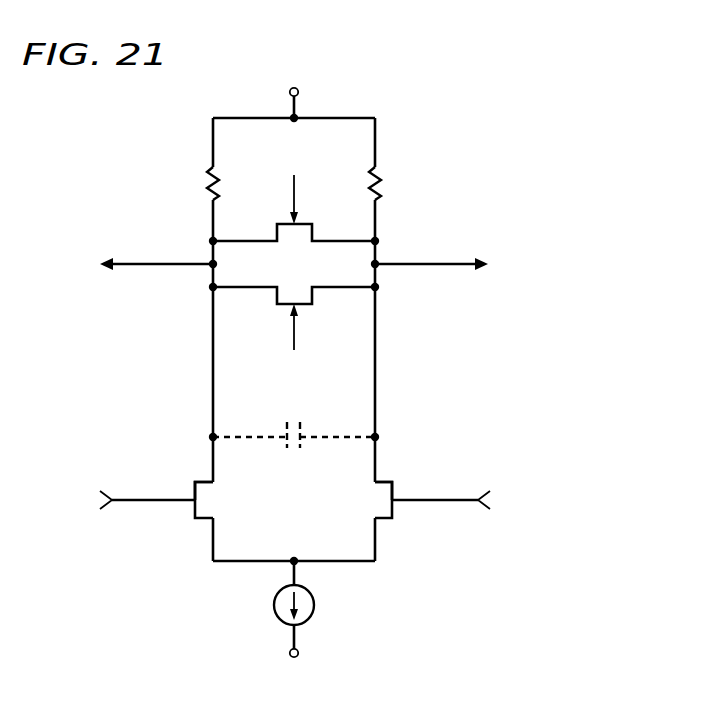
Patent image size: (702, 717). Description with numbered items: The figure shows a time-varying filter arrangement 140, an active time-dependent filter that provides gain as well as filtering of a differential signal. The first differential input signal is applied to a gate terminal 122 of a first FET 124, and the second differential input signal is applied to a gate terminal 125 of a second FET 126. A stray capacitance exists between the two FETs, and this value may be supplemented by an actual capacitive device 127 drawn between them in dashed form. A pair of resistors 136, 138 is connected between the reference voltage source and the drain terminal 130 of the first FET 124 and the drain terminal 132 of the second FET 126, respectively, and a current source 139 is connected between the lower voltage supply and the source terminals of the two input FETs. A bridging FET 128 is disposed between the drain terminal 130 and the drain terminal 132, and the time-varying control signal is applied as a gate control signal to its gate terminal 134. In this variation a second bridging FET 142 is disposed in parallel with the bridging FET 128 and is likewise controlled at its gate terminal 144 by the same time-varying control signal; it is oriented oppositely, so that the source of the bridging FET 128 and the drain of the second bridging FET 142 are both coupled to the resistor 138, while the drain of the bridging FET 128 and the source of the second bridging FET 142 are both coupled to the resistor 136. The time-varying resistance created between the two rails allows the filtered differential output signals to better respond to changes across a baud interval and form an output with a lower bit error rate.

The gate terminal 122 is at (194, 514).
The first FET 124 is at (198, 481).
The gate terminal 125 is at (394, 514).
The second FET 126 is at (390, 481).
The capacitive device 127 is at (286, 425).
The bridging FET 128 is at (313, 230).
The drain terminal 130 is at (212, 436).
The drain terminal 132 is at (376, 436).
The gate terminal 134 is at (290, 222).
The resistor 136 is at (210, 181).
The resistor 138 is at (380, 180).
The current source 139 is at (274, 605).
The time-varying filter arrangement 140 is at (522, 193).
The second bridging FET 142 is at (313, 299).
The gate terminal 144 is at (290, 307).